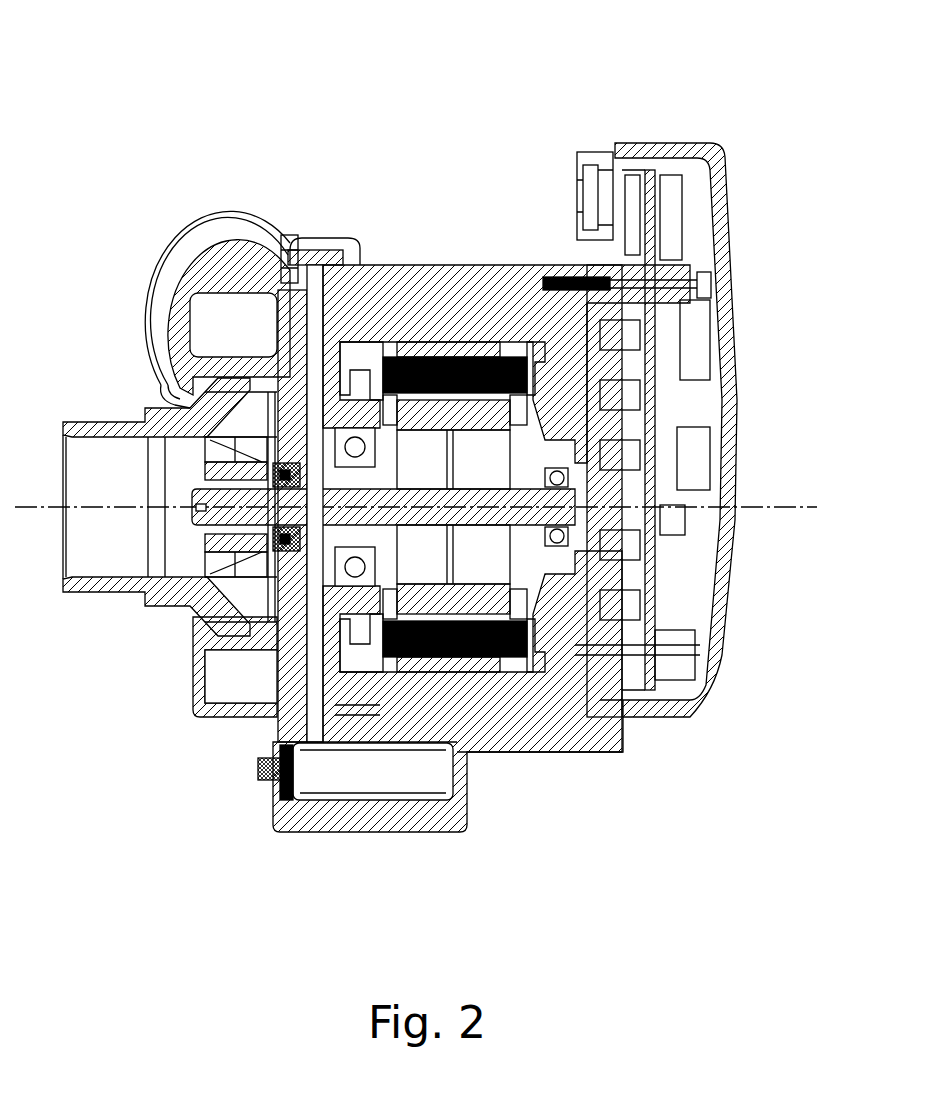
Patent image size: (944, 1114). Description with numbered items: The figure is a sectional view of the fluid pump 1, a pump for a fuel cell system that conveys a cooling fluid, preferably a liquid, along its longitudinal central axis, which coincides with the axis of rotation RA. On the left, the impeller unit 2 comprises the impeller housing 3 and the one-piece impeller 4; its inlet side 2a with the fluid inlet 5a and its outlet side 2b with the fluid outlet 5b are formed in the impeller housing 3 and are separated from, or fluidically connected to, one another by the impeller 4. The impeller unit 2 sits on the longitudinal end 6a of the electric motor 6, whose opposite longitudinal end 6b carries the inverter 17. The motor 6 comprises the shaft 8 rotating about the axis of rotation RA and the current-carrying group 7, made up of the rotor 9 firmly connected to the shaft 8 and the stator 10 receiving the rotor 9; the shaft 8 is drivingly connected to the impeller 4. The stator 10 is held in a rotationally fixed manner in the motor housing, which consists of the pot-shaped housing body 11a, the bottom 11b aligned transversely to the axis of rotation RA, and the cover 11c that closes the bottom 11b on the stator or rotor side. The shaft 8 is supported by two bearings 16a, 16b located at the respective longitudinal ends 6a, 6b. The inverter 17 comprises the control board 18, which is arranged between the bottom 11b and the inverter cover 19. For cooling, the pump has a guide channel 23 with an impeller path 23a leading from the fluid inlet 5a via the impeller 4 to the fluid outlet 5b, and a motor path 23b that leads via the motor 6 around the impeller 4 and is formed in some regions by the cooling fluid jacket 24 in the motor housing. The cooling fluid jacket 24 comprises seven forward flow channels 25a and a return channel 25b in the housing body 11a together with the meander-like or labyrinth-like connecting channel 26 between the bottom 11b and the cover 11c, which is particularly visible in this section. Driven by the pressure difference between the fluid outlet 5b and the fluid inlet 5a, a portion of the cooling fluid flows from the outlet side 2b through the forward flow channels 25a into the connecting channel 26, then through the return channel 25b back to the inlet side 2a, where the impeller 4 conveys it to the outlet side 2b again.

The fluid pump 1 is at (117, 80).
The impeller unit 2 is at (288, 203).
The inlet side 2a is at (98, 558).
The outlet side 2b is at (250, 317).
The impeller housing 3 is at (98, 412).
The impeller 4 is at (245, 620).
The fluid inlet 5a is at (155, 632).
The fluid outlet 5b is at (217, 305).
The electric motor 6 is at (623, 75).
The longitudinal end 6a is at (304, 226).
The longitudinal end 6b is at (572, 243).
The group 7 is at (397, 178).
The shaft 8 is at (505, 345).
The rotor 9 is at (470, 492).
The stator 10 is at (425, 447).
The housing body 11a is at (512, 745).
The bottom 11b is at (575, 700).
The cover 11c is at (628, 735).
The bearing 16a is at (275, 762).
The bearing 16b is at (685, 660).
The inverter 17 is at (738, 120).
The control board 18 is at (657, 460).
The inverter cover 19 is at (723, 386).
The guide channel 23 is at (213, 315).
The impeller path 23a is at (190, 388).
The motor path 23b is at (370, 726).
The cooling fluid jacket 24 is at (290, 813).
The forward flow channels 25a is at (290, 813).
The return channel 25b is at (290, 813).
The connecting channel 26 is at (662, 522).
The axis of rotation RA is at (808, 507).